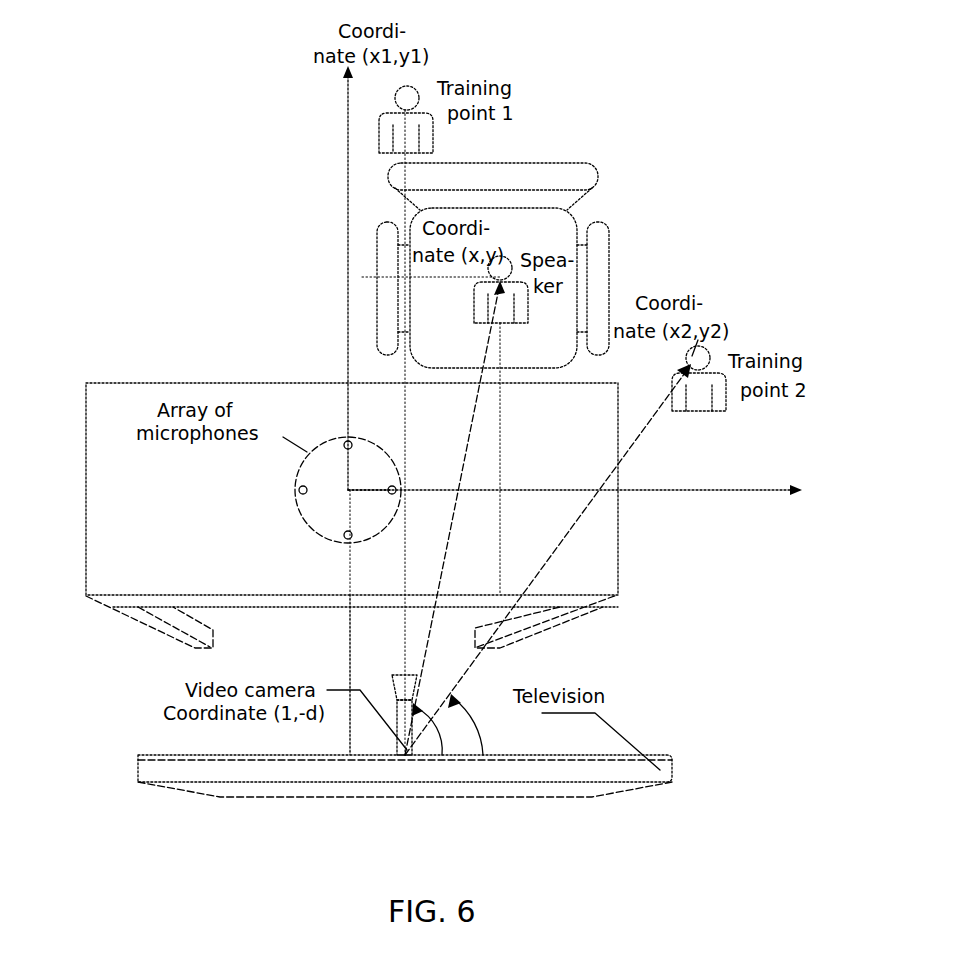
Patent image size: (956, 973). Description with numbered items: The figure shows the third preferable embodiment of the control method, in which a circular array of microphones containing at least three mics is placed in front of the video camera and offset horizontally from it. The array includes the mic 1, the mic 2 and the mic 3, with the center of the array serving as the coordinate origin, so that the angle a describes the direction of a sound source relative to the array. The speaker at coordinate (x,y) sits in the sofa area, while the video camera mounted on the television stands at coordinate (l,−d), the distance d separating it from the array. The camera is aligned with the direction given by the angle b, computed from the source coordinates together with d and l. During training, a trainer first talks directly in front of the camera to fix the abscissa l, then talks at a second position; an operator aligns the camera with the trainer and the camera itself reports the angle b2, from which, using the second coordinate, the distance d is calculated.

The mic 1 is at (300, 488).
The mic 2 is at (343, 440).
The mic 3 is at (395, 488).
The angle a is at (370, 477).
The distance d is at (386, 675).
The angle b is at (427, 726).
The angle b2 is at (473, 724).